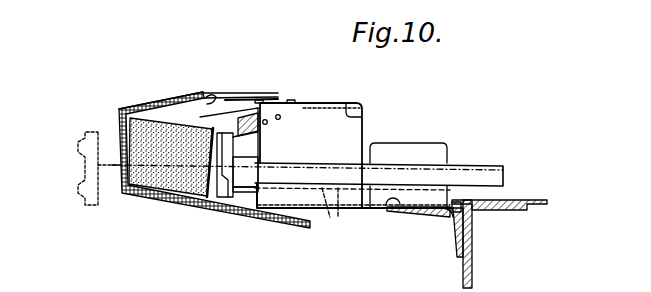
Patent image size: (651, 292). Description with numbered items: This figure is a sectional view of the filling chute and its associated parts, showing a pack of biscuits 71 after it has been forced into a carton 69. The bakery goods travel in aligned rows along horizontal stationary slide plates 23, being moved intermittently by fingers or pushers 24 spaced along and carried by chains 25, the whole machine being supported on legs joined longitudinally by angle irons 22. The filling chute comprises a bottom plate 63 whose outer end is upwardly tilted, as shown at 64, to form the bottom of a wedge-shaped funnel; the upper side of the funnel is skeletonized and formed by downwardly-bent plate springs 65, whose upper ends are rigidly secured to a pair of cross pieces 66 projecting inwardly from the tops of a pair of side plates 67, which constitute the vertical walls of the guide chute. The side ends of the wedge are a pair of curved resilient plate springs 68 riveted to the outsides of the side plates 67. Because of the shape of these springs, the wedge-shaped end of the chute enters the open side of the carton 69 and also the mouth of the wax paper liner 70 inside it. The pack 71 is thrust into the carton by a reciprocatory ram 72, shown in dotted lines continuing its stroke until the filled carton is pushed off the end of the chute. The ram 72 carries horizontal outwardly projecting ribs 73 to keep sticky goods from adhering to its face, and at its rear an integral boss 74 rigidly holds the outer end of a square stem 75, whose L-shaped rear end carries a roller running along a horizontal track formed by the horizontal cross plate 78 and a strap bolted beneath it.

The angle irons 22 is at (473, 266).
The horizontal stationary slide plates 23 is at (393, 214).
The fingers or pushers 24 is at (432, 150).
The chains 25 is at (453, 228).
The bottom plate 63 is at (356, 211).
The upwardly tilted outer end 64 is at (163, 198).
The plate springs 65 is at (213, 102).
The cross pieces 66 is at (363, 117).
The side plates 67 is at (308, 154).
The curved resilient plate springs 68 is at (248, 126).
The carton 69 is at (169, 100).
The wax paper liner 70 is at (273, 96).
The pack of biscuits 71 is at (172, 128).
The reciprocatory ram 72 is at (90, 131).
The ribs 73 is at (207, 203).
The boss 74 is at (247, 203).
The square stem 75 is at (330, 217).
The horizontal cross plate 78 is at (541, 199).